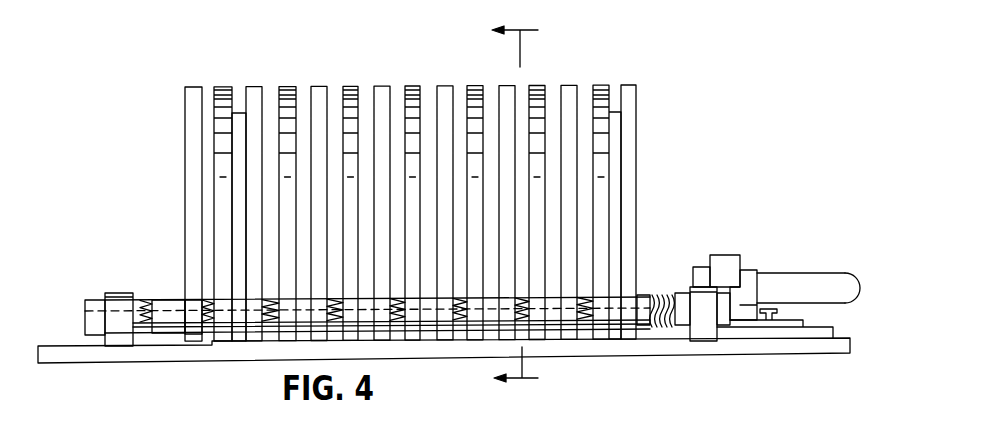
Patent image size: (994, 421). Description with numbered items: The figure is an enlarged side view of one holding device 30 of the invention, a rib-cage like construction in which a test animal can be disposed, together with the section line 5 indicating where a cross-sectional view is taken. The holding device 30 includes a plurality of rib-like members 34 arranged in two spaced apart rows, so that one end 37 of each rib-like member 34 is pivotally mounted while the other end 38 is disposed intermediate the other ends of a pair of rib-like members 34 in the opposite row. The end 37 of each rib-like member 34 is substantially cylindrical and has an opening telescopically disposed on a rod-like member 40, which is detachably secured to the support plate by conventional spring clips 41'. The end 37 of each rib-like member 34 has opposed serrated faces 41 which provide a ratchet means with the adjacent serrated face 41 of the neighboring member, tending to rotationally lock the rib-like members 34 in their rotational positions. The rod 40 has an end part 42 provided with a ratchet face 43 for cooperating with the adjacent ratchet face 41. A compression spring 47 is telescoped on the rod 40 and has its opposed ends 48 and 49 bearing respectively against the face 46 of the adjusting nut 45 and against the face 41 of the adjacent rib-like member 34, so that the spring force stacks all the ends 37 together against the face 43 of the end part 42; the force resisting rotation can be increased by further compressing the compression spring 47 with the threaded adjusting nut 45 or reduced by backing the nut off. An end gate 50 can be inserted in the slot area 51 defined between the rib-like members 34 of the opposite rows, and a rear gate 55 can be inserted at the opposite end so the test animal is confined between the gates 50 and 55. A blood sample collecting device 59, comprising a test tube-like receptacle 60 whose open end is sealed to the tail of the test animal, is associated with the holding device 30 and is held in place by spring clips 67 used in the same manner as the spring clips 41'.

The holding device 30 is at (764, 104).
The section line 5- 5 is at (527, 204).
The rib-like member 34 is at (220, 185).
The end 37 is at (192, 304).
The other end 38 is at (190, 86).
The rod-like member 40 is at (296, 328).
The serrated face 41 is at (370, 320).
The spring clip 41' is at (407, 325).
The end part 42 is at (88, 318).
The ratchet face 43 is at (145, 302).
The adjusting nut 45 is at (725, 300).
The face 46 is at (676, 293).
The compression spring 47 is at (660, 335).
The end 48 is at (670, 333).
The end 49 is at (653, 295).
The end gate 50 is at (240, 135).
The slot area 51 is at (237, 78).
The rear gate 55 is at (620, 185).
The blood sample collecting device 59 is at (810, 268).
The test tube-like receptacle 60 is at (833, 302).
The spring clip 67 is at (712, 254).